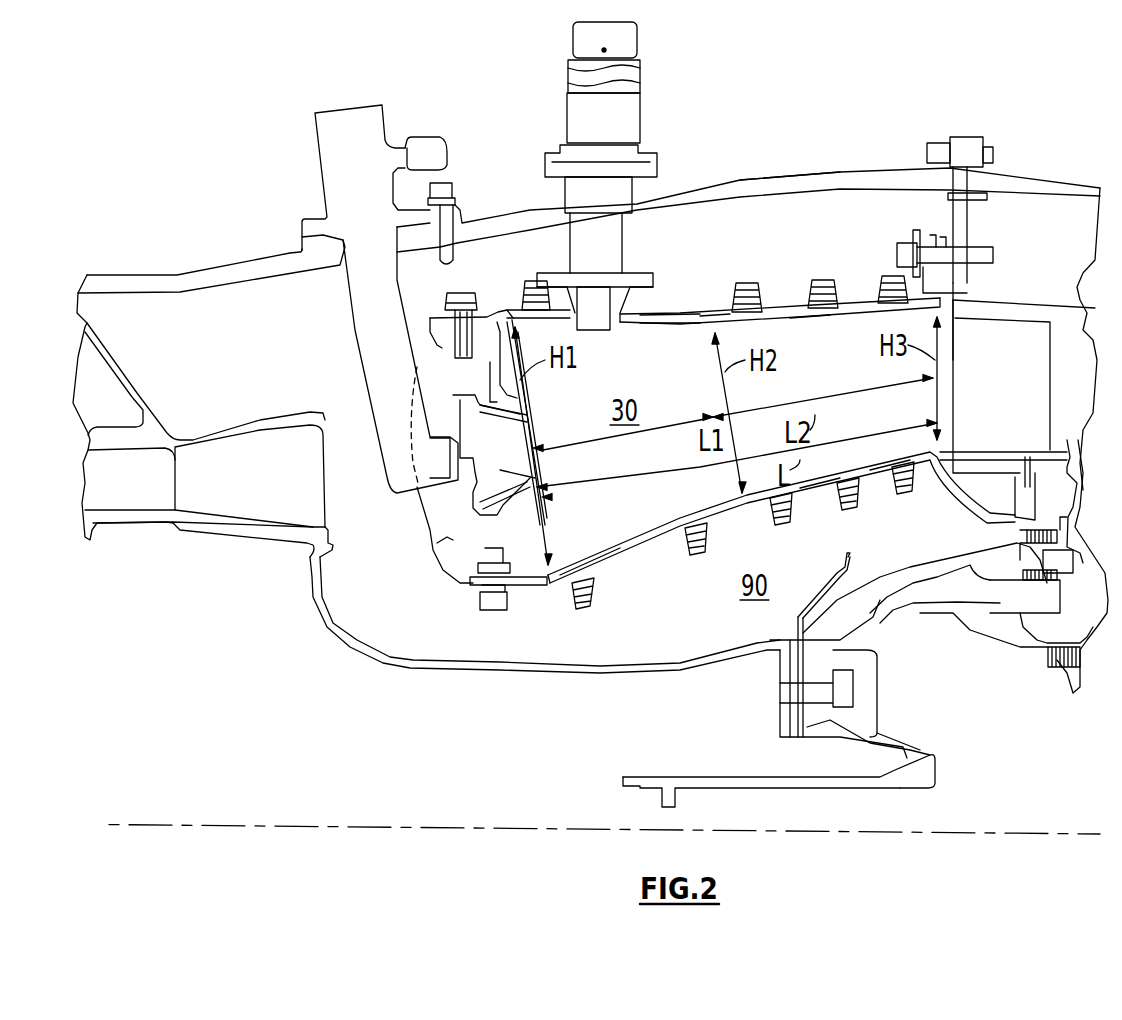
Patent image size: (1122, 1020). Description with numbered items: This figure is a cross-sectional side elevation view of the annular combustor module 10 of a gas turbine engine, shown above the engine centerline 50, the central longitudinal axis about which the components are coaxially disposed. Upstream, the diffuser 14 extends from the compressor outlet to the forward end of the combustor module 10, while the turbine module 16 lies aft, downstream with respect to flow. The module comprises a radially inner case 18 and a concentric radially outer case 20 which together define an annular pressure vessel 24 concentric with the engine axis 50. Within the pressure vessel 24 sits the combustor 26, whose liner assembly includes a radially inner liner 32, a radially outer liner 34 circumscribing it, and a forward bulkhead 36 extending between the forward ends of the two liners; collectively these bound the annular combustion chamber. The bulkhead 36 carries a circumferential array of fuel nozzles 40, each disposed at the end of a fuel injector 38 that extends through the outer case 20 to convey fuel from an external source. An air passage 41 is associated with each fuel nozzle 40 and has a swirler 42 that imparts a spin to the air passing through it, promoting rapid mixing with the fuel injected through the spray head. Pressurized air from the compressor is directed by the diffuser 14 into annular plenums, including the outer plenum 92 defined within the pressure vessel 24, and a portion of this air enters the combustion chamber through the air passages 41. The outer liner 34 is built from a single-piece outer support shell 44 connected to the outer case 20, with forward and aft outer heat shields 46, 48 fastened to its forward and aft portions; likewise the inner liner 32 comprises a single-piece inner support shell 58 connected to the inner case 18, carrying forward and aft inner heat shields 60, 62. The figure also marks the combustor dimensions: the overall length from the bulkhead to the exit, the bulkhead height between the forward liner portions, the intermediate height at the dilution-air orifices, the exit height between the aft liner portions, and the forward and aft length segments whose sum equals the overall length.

The combustor module 10 is at (738, 114).
The diffuser 14 is at (300, 482).
The turbine module 16 is at (1065, 380).
The radially inner case 18 is at (600, 683).
The radially outer case 20 is at (752, 185).
The annular pressure vessel 24 is at (862, 160).
The combustor 26 is at (783, 290).
The radially inner liner 32 is at (655, 570).
The radially outer liner 34 is at (715, 300).
The bulkhead 36 is at (522, 472).
The fuel injector 38 is at (357, 340).
The fuel nozzle 40 is at (473, 458).
The air passage 41 is at (550, 457).
The swirler 42 is at (497, 425).
The outer support shell 44 is at (665, 312).
The forward outer heat shield 46 is at (648, 324).
The aft outer heat shield 48 is at (808, 320).
The central longitudinal axis 50 is at (472, 827).
The inner support shell 58 is at (812, 500).
The forward inner heat shield 60 is at (610, 545).
The aft inner heat shield 62 is at (888, 492).
The annular plenum 92 is at (878, 238).